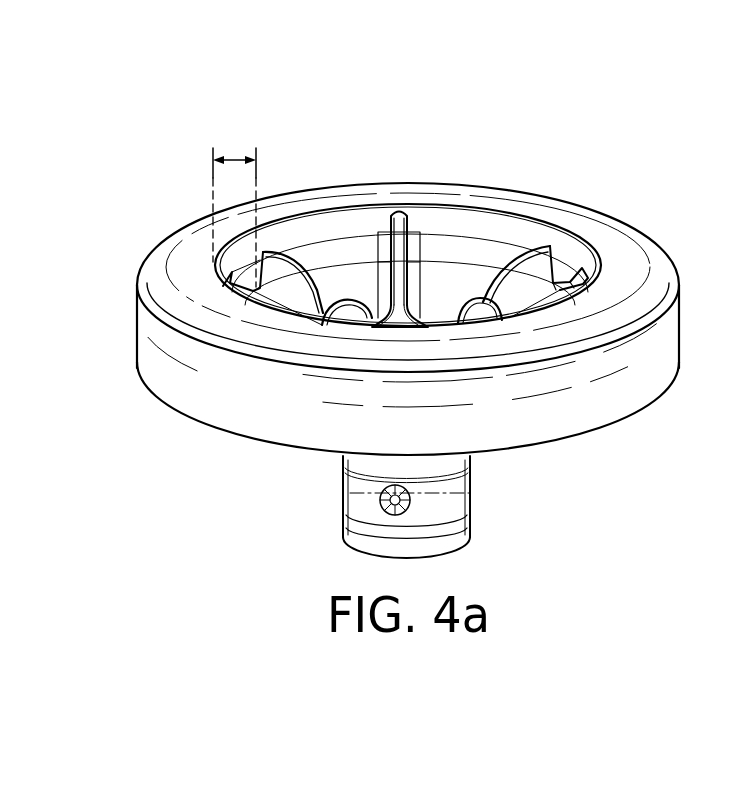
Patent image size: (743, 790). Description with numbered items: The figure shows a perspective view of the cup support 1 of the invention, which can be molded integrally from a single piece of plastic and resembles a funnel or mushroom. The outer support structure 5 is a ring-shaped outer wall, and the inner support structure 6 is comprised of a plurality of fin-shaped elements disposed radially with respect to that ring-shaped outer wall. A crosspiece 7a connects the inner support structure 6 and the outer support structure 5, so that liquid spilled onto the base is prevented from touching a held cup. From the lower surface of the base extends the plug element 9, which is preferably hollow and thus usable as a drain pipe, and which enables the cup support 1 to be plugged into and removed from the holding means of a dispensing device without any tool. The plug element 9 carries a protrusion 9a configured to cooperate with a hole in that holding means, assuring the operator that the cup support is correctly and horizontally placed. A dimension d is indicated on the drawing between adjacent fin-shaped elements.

The cup support 1 is at (378, 143).
The outer support structure 5 is at (613, 268).
The inner support structure 6 is at (533, 268).
The crosspiece 7a is at (572, 273).
The plug element 9 is at (457, 497).
The protrusion 9a is at (380, 501).
The distance d is at (236, 158).